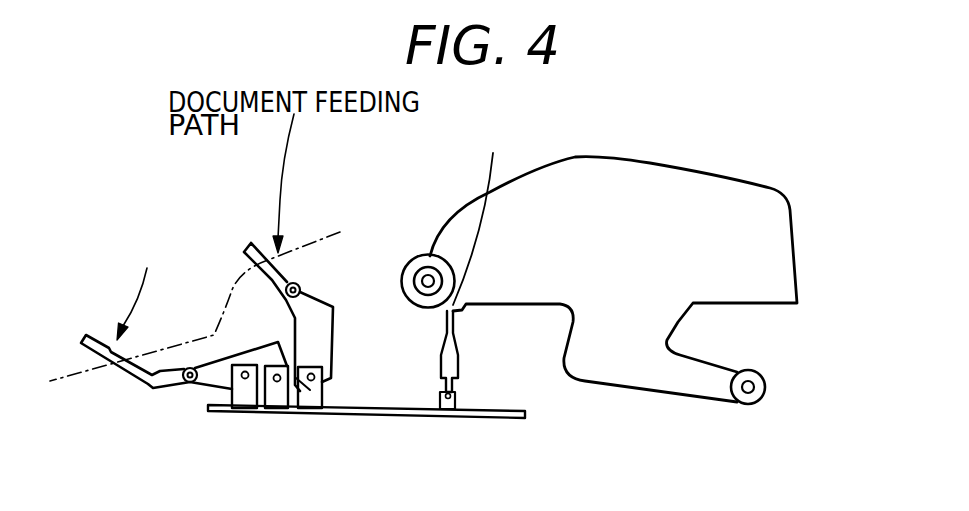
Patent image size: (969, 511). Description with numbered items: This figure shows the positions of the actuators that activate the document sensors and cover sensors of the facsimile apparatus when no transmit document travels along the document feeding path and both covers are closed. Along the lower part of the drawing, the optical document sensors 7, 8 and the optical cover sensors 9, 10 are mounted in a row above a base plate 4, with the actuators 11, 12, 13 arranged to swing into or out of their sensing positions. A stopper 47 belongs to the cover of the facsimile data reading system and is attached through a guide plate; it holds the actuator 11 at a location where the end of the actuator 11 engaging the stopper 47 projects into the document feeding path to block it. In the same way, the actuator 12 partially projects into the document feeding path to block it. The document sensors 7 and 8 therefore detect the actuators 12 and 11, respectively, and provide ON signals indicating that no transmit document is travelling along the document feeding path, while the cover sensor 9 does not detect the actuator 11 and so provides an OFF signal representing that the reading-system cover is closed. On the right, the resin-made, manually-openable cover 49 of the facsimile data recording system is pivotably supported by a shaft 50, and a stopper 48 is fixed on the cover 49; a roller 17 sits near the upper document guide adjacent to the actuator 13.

The base plate 4 is at (497, 422).
The optical document sensor 7 is at (308, 400).
The optical document sensor 8 is at (243, 400).
The optical cover sensor 9 is at (276, 400).
The optical cover sensor 10 is at (446, 412).
The actuator 11 is at (212, 373).
The actuator 12 is at (313, 313).
The actuator 13 is at (442, 364).
The feed roller 17 is at (414, 255).
The stopper 47 is at (96, 338).
The stopper 48 is at (484, 215).
The cover 49 is at (640, 390).
The shaft 50 is at (758, 392).